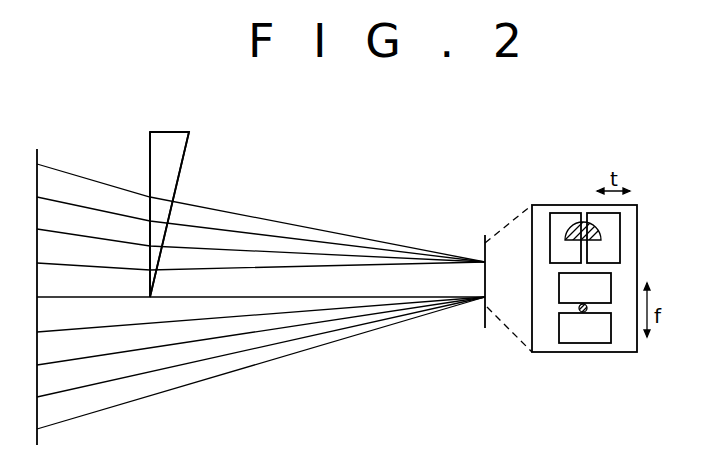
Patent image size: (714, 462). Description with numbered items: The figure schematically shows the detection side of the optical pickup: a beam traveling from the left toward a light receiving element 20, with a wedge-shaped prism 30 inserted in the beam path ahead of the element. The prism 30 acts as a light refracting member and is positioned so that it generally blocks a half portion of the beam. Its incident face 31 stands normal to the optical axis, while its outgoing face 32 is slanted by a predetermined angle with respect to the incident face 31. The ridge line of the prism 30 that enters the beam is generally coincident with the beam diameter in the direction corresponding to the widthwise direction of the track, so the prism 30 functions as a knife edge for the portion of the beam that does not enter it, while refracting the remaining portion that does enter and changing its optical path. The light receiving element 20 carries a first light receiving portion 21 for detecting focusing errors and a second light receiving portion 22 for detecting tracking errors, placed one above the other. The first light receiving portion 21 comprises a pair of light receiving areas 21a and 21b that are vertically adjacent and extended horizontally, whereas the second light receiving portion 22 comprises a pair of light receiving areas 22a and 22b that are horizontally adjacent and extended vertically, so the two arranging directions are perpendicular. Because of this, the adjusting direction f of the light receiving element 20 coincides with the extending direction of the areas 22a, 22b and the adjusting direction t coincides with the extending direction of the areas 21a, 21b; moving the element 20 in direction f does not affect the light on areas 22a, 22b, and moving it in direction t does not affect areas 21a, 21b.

The light receiving element 20 is at (637, 204).
The first light receiving portion 21 is at (559, 355).
The light receiving area 21a is at (563, 292).
The light receiving area 21b is at (577, 338).
The second light receiving portion 22 is at (552, 190).
The light receiving area 22a is at (557, 217).
The light receiving area 22b is at (597, 217).
The wedge-shaped prism 30 is at (172, 143).
The incident face 31 is at (150, 151).
The outgoing face 32 is at (184, 157).